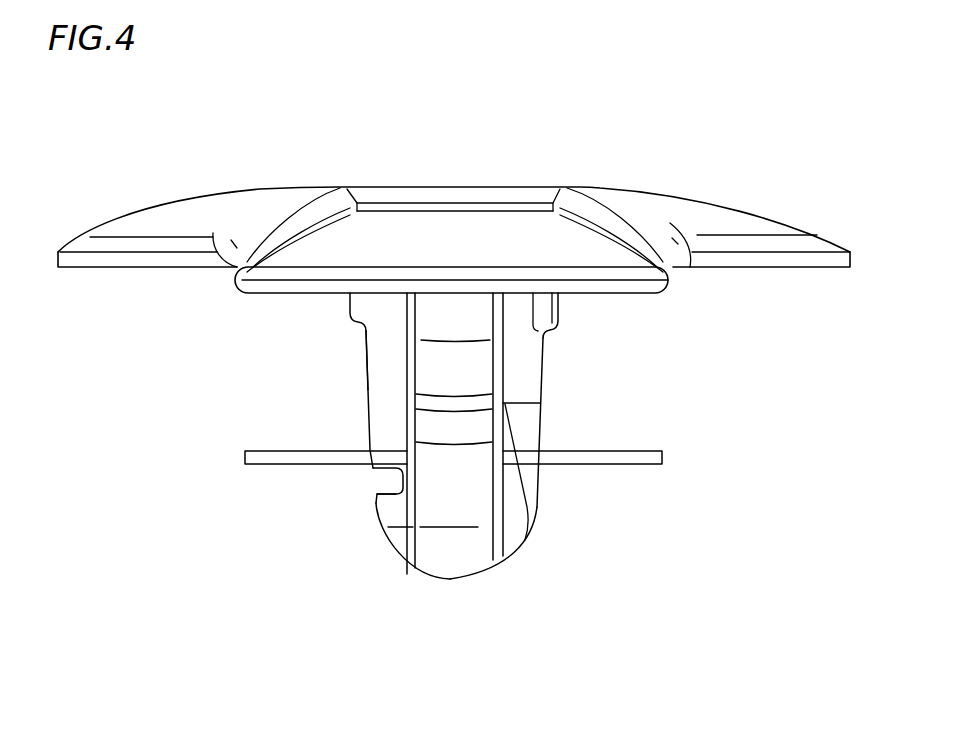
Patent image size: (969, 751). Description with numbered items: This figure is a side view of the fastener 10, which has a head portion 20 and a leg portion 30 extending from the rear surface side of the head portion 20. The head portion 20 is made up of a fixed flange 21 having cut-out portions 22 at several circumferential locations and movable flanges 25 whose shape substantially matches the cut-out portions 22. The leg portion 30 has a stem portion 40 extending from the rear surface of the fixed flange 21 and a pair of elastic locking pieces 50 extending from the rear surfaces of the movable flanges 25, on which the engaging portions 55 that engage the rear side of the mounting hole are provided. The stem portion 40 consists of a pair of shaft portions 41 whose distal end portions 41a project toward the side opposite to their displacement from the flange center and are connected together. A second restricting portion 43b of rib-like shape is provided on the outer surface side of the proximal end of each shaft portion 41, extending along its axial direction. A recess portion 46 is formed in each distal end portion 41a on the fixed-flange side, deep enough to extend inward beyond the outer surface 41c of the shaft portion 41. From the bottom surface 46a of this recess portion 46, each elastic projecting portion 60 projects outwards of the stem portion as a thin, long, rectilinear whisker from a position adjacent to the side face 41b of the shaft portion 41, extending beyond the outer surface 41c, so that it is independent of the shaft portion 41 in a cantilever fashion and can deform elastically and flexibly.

The fastener 10 is at (388, 180).
The head portion 20 is at (657, 120).
The fixed flange 21 is at (488, 187).
The cut-out portions 22 is at (278, 213).
The movable flanges 25 is at (582, 232).
The leg portion 30 is at (487, 575).
The stem portion 40 is at (360, 348).
The shaft portions 41 is at (366, 423).
The distal end portion 41a is at (395, 507).
The side face 41b is at (382, 388).
The outer surface 41c is at (380, 505).
The second restricting portion 43b is at (350, 313).
The recess portion 46 is at (380, 478).
The bottom surface 46a is at (393, 490).
The elastic locking pieces 50 is at (454, 507).
The engaging portions 55 is at (460, 397).
The elastic projecting portions 60 is at (247, 458).